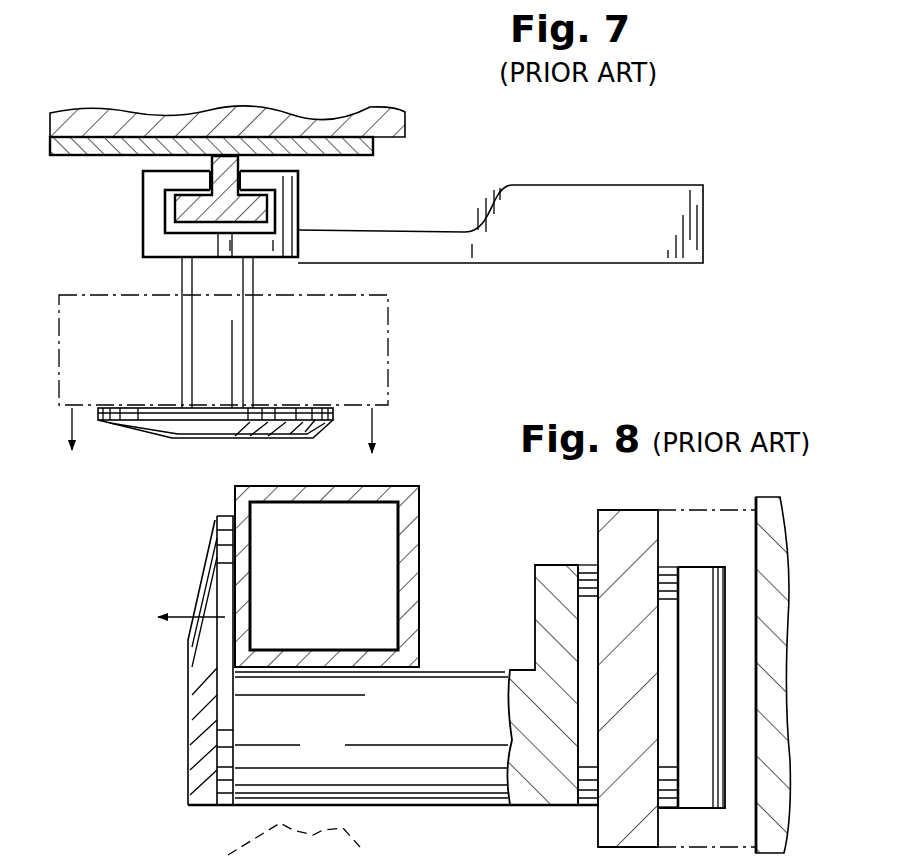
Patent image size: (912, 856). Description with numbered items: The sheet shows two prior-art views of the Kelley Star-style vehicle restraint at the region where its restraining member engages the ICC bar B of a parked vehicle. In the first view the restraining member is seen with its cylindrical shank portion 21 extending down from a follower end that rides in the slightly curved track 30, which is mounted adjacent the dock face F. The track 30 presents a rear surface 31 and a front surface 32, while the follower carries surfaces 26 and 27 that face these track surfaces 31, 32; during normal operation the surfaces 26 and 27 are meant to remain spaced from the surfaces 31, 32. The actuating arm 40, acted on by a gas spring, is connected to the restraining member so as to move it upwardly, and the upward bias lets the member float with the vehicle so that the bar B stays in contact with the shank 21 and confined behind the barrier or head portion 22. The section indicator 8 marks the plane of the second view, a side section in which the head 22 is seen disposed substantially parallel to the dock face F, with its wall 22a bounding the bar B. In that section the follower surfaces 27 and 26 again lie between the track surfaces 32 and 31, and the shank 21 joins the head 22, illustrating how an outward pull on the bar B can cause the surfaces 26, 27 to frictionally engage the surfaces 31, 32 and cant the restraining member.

In FIG. 7, the section line 8- 8 is at (273, 43).
In FIG. 7, the shank portion 21 is at (203, 273).
In FIG. 8, the shank portion 21 is at (407, 700).
In FIG. 7, the barrier or head portion 22 is at (222, 430).
In FIG. 8, the barrier or head portion 22 is at (197, 712).
In FIG. 8, the wall of flange 22a is at (240, 553).
In FIG. 7, the follower surface 26 is at (167, 192).
In FIG. 8, the follower surface 26 is at (668, 600).
In FIG. 7, the follower surface 27 is at (172, 231).
In FIG. 8, the follower surface 27 is at (587, 575).
In FIG. 7, the track 30 is at (233, 188).
In FIG. 7, the rear surface 31 is at (258, 188).
In FIG. 8, the rear surface 31 is at (668, 560).
In FIG. 7, the front surface 32 is at (232, 227).
In FIG. 8, the front surface 32 is at (623, 517).
In FIG. 7, the actuating arm 40 is at (553, 198).
In FIG. 7, the ICC bar B is at (124, 357).
In FIG. 8, the ICC bar B is at (329, 582).
In FIG. 8, the dock face F is at (758, 567).